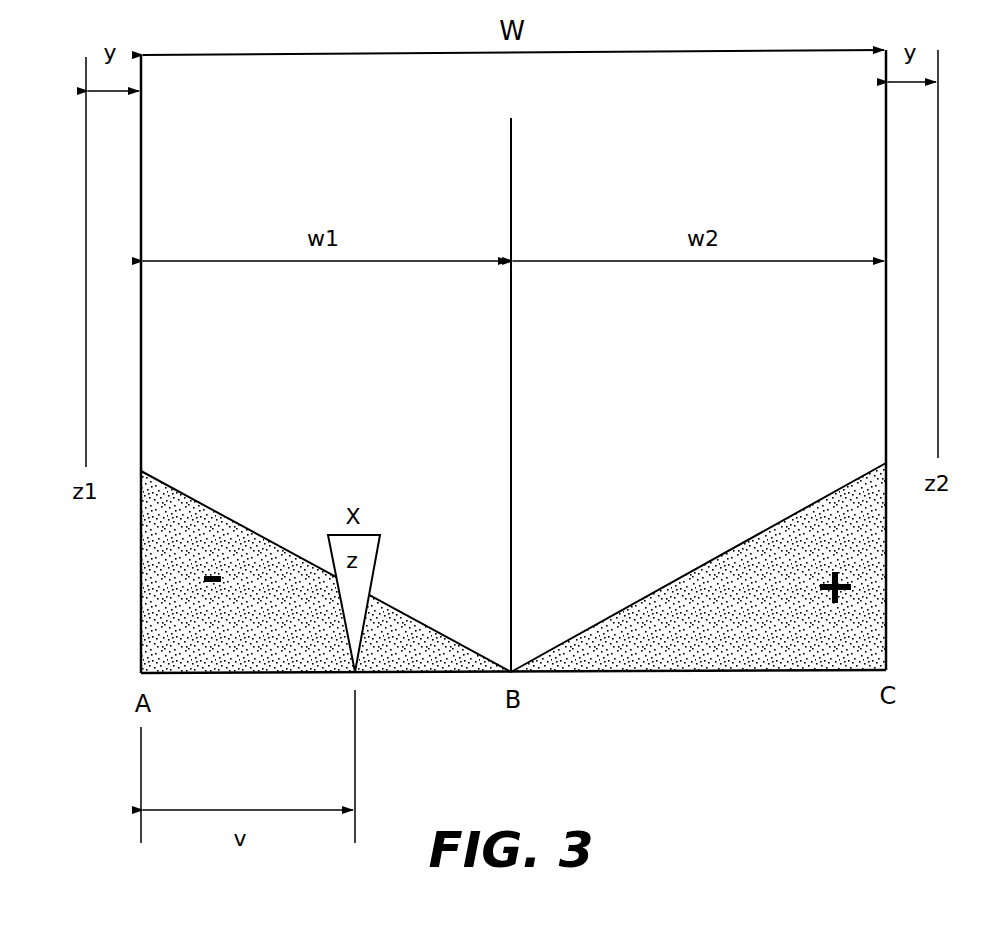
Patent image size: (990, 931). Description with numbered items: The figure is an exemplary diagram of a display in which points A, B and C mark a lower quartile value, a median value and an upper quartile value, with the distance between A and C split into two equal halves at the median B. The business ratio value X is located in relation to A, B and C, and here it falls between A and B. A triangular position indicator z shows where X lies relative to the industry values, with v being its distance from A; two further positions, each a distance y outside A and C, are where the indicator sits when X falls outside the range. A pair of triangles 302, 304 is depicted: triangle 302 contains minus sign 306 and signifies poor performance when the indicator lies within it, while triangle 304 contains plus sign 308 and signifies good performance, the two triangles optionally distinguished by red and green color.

The triangle 302 is at (140, 587).
The triangle 304 is at (875, 605).
The minus sign 306 is at (204, 574).
The plus sign 308 is at (830, 576).